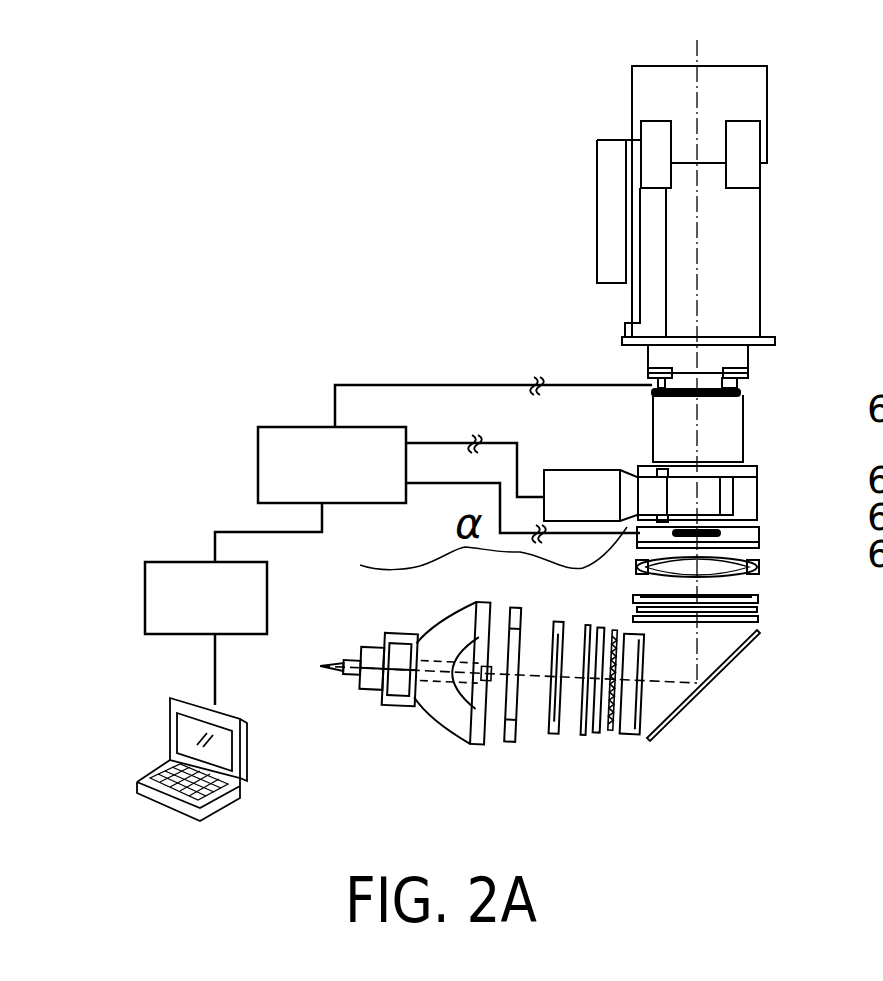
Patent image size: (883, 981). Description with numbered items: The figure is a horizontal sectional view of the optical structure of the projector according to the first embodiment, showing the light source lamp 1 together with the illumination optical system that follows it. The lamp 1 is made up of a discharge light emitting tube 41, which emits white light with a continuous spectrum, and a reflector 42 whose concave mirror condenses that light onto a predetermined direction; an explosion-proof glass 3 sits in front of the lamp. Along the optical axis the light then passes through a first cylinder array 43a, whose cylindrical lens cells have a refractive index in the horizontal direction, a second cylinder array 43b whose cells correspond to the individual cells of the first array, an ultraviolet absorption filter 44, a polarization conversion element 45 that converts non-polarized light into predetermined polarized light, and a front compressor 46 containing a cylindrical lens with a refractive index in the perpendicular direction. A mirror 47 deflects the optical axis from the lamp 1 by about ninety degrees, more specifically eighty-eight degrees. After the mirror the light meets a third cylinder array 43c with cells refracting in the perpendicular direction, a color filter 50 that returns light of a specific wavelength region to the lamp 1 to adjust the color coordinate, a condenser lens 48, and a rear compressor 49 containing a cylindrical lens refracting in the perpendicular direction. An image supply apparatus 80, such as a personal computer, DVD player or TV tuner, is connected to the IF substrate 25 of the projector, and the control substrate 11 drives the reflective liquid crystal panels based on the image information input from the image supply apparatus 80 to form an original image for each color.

The lamp 1 is at (438, 617).
The explosion-proof glass 3 is at (506, 746).
The control substrate 11 is at (258, 433).
The IF substrate 25 is at (145, 600).
The discharge light emitting tube 41 is at (412, 633).
The reflector 42 is at (440, 723).
The first cylinder array 43a is at (548, 738).
The second cylinder array 43b is at (598, 738).
The third cylinder array 43c is at (760, 598).
The ultraviolet absorption filter 44 is at (583, 740).
The polarization conversion element 45 is at (612, 734).
The front compressor 46 is at (636, 738).
The mirror 47 is at (690, 693).
The condenser lens 48 is at (762, 567).
The rear compressor 49 is at (759, 533).
The color filter 50 is at (759, 610).
The image supply apparatus 80 is at (247, 753).